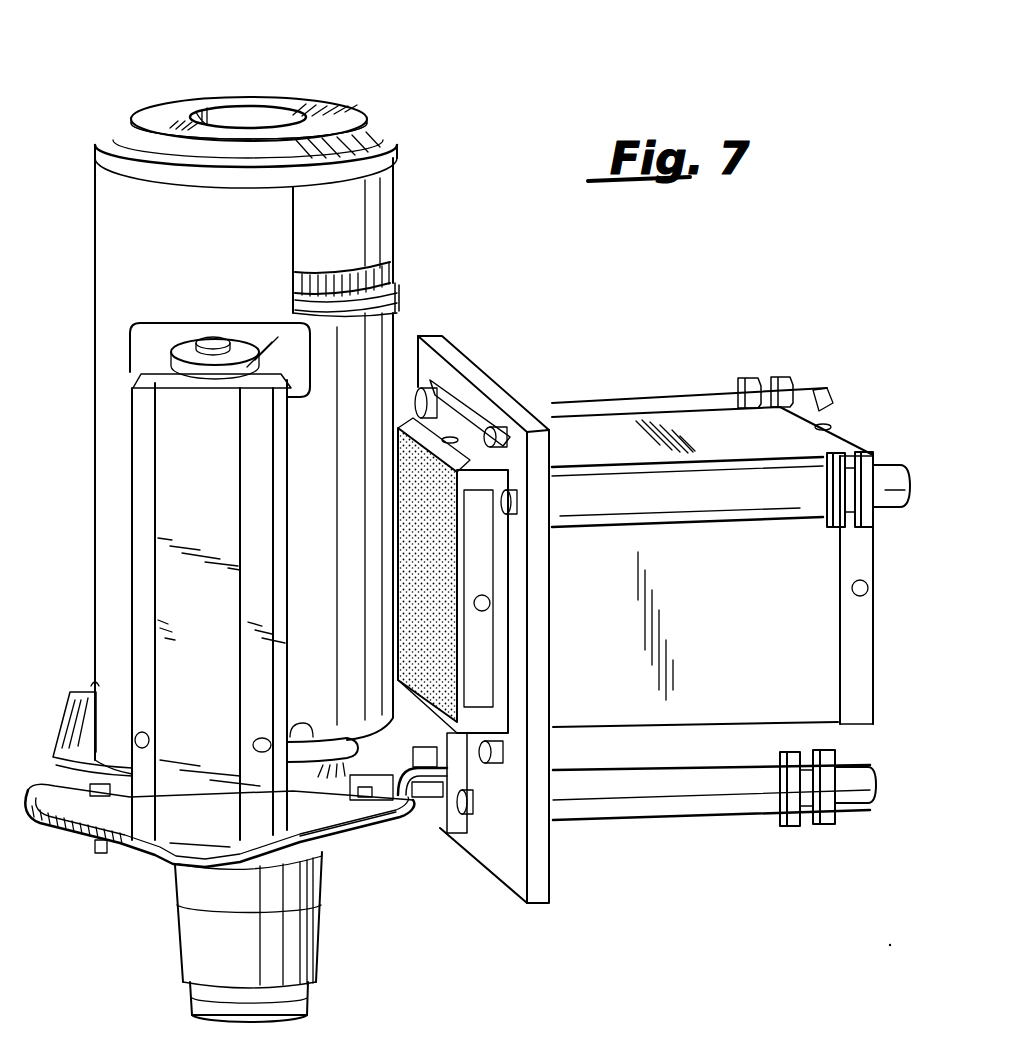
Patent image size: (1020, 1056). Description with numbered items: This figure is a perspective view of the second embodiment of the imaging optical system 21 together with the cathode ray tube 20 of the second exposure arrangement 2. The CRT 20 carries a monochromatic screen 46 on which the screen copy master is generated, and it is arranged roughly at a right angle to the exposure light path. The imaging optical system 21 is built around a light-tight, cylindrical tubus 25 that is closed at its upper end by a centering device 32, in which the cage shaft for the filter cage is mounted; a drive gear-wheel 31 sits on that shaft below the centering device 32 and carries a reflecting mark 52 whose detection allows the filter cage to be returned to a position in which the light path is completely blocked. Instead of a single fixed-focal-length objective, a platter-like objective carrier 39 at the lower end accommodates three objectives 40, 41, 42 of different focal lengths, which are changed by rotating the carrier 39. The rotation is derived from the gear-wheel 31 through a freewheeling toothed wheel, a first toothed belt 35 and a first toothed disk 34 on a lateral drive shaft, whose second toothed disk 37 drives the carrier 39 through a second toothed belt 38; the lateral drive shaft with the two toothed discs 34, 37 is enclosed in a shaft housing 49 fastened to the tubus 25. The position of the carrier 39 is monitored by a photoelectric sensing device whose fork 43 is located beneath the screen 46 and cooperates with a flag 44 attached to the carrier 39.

The second exposure arrangement 2 is at (471, 95).
The cathode ray tube 20 is at (700, 718).
The imaging optical system 21 is at (150, 100).
The tubus 25 is at (400, 320).
The gear-wheel 31 is at (388, 268).
The centering device 32 is at (372, 135).
The first toothed disk 34 is at (185, 332).
The first toothed belt 35 is at (252, 332).
The second toothed disk 37 is at (200, 870).
The second toothed belt 38 is at (147, 850).
The platter-like objective carrier 39 is at (80, 818).
The objective 40 is at (300, 960).
The objective 41 is at (64, 718).
The objective 42 is at (343, 740).
The fork 43 is at (423, 748).
The flag 44 is at (402, 764).
The screen 46 is at (428, 470).
The shaft housing 49 is at (135, 635).
The reflecting mark 52 is at (370, 213).